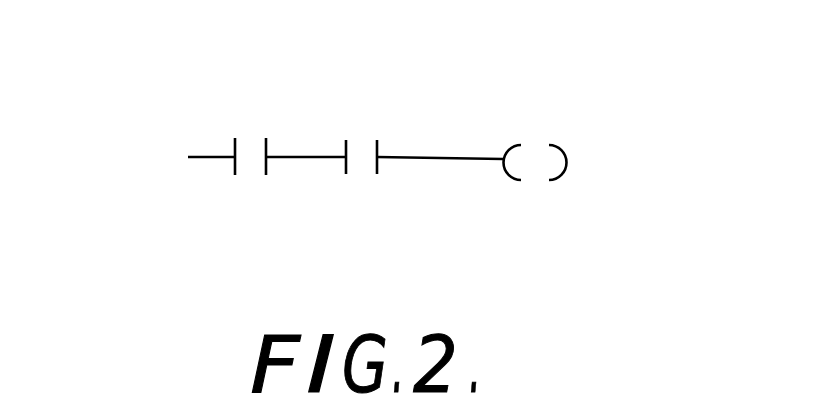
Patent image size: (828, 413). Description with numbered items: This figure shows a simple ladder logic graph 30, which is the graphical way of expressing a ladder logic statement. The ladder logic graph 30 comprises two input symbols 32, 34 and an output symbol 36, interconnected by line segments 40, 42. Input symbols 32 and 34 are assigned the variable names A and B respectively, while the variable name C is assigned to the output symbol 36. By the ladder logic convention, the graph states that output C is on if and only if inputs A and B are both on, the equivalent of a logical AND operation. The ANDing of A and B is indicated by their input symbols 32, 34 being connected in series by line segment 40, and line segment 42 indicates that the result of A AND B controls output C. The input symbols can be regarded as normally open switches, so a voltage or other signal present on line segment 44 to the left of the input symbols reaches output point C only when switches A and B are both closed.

The ladder logic graph 30 is at (440, 101).
The input symbol 32 is at (254, 195).
The input symbol 34 is at (362, 198).
The output symbol 36 is at (533, 202).
The line segment 40 is at (313, 158).
The line segment 42 is at (457, 160).
The line segment 44 is at (213, 157).